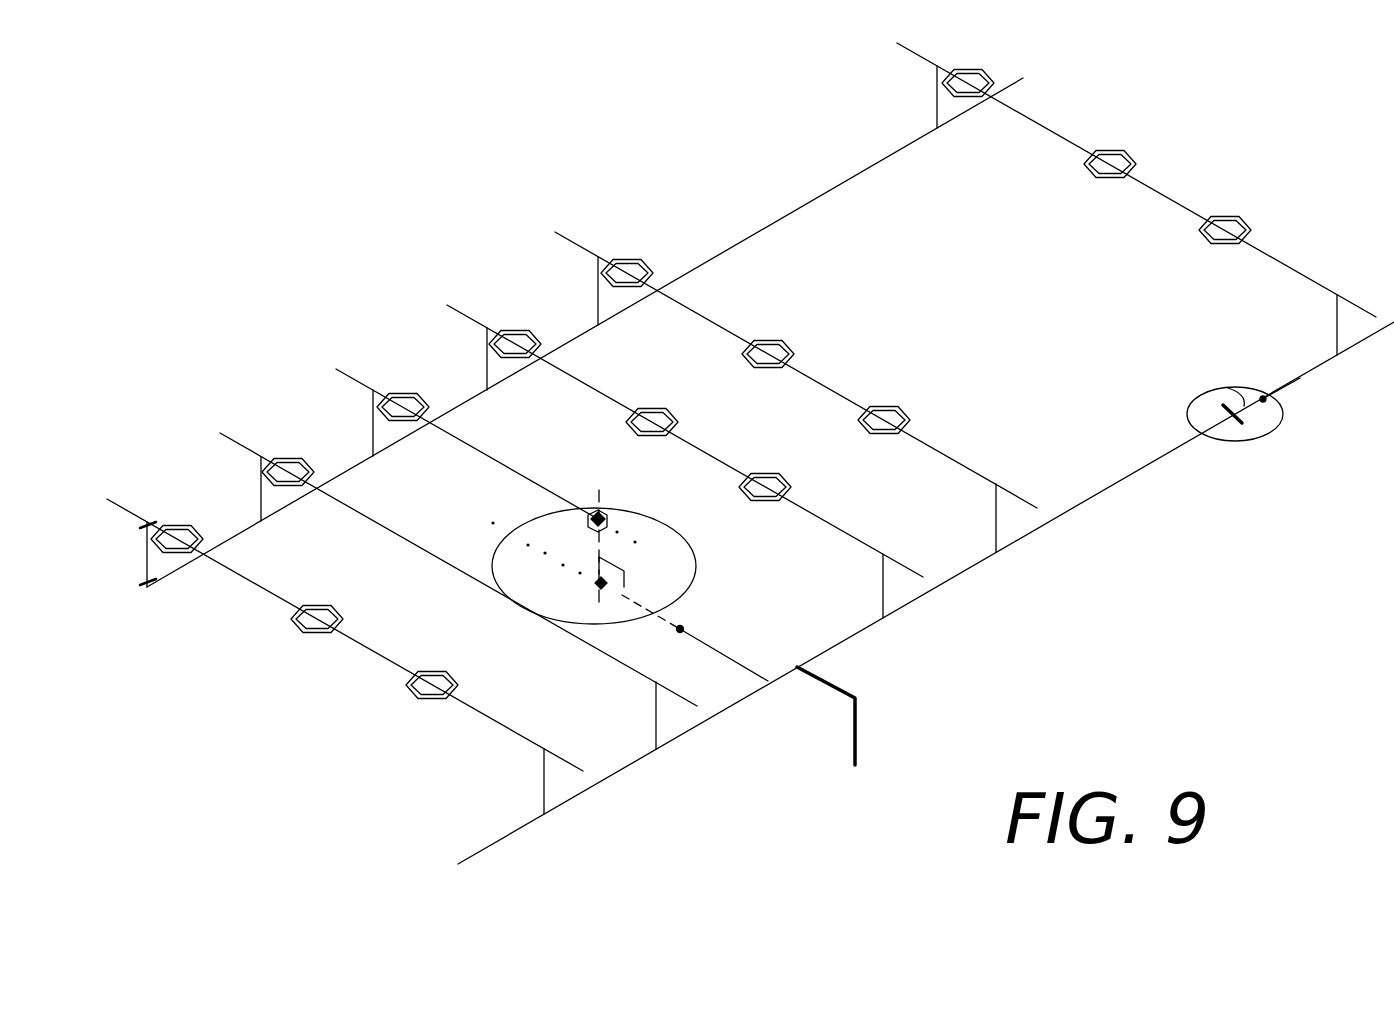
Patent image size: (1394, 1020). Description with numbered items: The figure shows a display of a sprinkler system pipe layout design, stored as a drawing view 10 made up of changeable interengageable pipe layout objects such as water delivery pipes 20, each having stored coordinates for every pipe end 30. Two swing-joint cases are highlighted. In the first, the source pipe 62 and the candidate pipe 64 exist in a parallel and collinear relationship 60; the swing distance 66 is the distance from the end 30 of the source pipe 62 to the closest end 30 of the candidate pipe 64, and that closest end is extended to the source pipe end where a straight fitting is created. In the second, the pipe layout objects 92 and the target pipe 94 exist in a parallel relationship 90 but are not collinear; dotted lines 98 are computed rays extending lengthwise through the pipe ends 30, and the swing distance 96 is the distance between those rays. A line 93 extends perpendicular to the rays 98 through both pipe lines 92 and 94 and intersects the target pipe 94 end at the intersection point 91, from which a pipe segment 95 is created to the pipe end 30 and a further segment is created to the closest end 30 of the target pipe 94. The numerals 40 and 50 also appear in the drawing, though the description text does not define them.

The drawing view 10 is at (1090, 654).
The water delivery pipes 20 is at (487, 366).
The pipe end 30 is at (338, 363).
The fastener nut 40 is at (790, 488).
The support leg 50 is at (853, 690).
The parallel and collinear relationship 60 is at (1277, 430).
The source pipe 62 is at (1162, 462).
The candidate pipe 64 is at (1297, 383).
The swing distance 66 is at (1242, 403).
The parallel relationship 90 is at (682, 545).
The intersection point 91 is at (598, 586).
The pipe layout object 92 is at (738, 662).
The line 93 is at (612, 562).
The target pipe 94 is at (510, 466).
The pipe segment 95 is at (624, 603).
The swing distance 96 is at (600, 550).
The dotted lines 98 is at (672, 508).